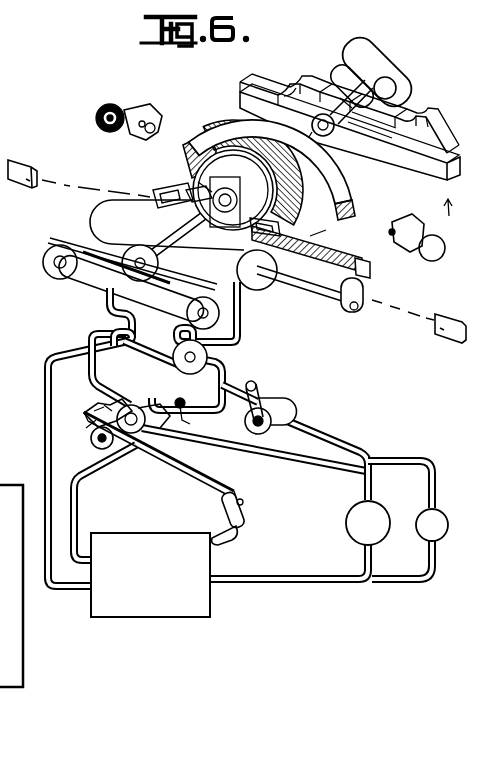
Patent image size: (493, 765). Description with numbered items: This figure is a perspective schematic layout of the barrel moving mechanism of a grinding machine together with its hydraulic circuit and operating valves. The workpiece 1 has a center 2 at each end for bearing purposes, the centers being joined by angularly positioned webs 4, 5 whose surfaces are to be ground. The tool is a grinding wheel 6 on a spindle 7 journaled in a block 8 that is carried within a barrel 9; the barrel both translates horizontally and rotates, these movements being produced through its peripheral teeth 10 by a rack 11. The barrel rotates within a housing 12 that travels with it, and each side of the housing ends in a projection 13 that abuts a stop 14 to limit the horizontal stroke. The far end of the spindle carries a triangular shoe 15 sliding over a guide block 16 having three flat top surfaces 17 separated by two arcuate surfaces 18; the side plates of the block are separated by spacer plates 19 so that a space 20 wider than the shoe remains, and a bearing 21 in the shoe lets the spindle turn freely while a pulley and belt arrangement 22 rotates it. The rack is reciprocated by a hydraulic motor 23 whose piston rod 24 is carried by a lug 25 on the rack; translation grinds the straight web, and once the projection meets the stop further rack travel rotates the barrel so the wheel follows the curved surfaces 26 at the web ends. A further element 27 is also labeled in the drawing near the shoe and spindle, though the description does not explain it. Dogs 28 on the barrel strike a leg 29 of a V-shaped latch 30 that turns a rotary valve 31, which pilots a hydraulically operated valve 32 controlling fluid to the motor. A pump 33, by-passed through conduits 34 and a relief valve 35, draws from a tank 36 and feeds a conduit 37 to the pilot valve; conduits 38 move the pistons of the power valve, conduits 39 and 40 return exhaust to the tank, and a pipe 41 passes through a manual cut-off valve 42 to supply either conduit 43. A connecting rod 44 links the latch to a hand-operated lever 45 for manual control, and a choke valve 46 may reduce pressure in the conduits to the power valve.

The workpiece 1 is at (70, 280).
The center 2 is at (53, 264).
The web 4 is at (93, 283).
The web 5 is at (188, 312).
The grinding wheel 6 is at (146, 256).
The spindle 7 is at (172, 246).
The block 8 is at (186, 192).
The barrel 9 is at (198, 182).
The peripheral teeth 10 is at (326, 230).
The rack 11 is at (368, 268).
The housing 12 is at (332, 198).
The projection 13 is at (188, 143).
The stop 14 is at (160, 124).
The shoe 15 is at (374, 128).
The guide block 16 is at (454, 216).
The flat top surface 17 is at (280, 84).
The arcuate surface 18 is at (300, 102).
The spacer plate 19 is at (242, 90).
The space 20 is at (290, 92).
The bearing 21 is at (342, 102).
The pulley and belt arrangement 22 is at (354, 42).
The hydraulic motor 23 is at (183, 220).
The piston rod 24 is at (310, 296).
The lug 25 is at (366, 304).
The curved surface 26 is at (160, 202).
The pin 27 is at (334, 144).
The dog 28 is at (36, 158).
The leg 29 is at (92, 410).
The V-shaped latch 30 is at (91, 441).
The rotary valve 31 is at (154, 406).
The hydraulically operated valve 32 is at (162, 338).
The pump 33 is at (380, 512).
The conduit 34 is at (412, 458).
The relief valve 35 is at (420, 538).
The tank 36 is at (174, 588).
The conduit 37 is at (286, 462).
The conduit 38 is at (90, 362).
The conduit 39 is at (46, 426).
The conduit 40 is at (78, 516).
The pipe 41 is at (332, 440).
The cut-off valve 42 is at (278, 404).
The conduit 43 is at (108, 310).
The connecting rod 44 is at (168, 462).
The hand-operated lever 45 is at (224, 502).
The choke valve 46 is at (188, 418).